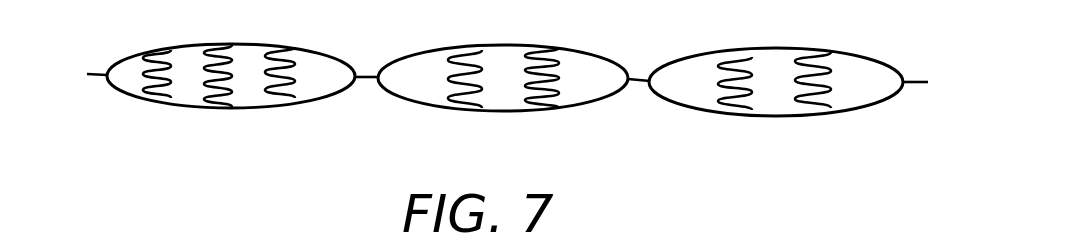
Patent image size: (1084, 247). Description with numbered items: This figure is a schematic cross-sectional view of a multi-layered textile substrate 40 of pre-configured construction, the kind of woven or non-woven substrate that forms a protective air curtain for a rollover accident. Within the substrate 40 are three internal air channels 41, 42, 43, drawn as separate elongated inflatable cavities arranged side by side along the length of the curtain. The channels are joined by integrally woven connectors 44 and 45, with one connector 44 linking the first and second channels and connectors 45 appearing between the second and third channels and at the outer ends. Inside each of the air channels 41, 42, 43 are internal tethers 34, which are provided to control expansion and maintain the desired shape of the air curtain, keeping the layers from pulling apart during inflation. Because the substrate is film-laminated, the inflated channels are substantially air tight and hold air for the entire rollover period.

The tethers 34 is at (217, 57).
The multi-layered textile substrate 40 is at (489, 83).
The internal air channel 41 is at (250, 97).
The internal air channel 42 is at (498, 97).
The internal air channel 43 is at (817, 100).
The integrally woven connector 44 is at (370, 75).
The integrally woven connector 45 is at (91, 75).